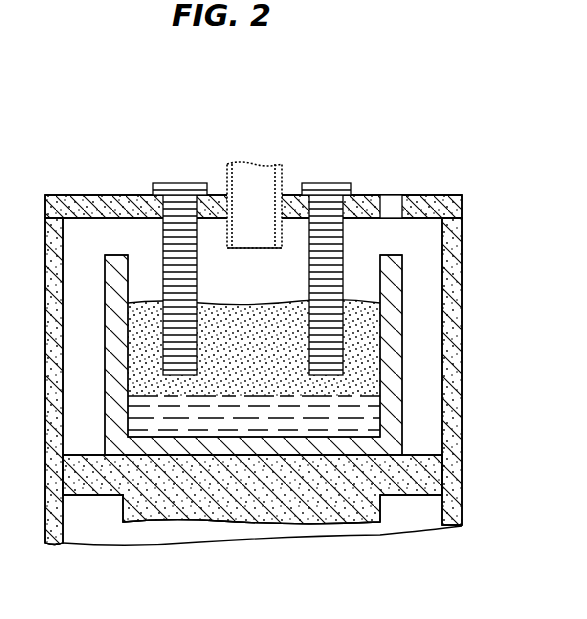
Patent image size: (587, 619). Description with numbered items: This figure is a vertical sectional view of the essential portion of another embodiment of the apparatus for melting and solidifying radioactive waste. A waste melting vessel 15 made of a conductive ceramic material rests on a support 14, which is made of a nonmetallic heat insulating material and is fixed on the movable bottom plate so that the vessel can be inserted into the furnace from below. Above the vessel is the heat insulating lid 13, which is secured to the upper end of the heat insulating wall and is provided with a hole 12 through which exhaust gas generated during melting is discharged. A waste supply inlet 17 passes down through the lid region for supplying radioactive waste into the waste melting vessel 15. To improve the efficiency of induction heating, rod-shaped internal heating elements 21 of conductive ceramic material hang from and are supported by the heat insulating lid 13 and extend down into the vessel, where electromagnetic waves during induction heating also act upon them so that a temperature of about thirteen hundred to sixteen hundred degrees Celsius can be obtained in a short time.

The hole 12 is at (393, 205).
The heat insulating lid 13 is at (462, 205).
The support 14 is at (422, 480).
The waste melting vessel 15 is at (395, 366).
The waste supply inlet 17 is at (263, 175).
The internal heating elements 21 is at (326, 228).